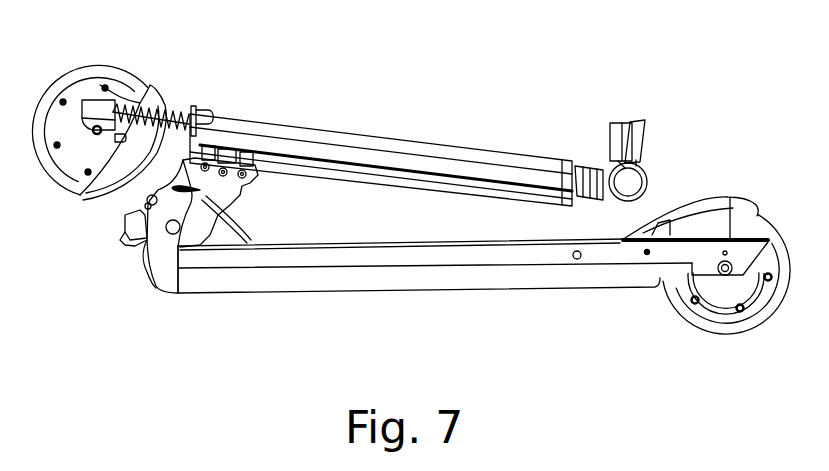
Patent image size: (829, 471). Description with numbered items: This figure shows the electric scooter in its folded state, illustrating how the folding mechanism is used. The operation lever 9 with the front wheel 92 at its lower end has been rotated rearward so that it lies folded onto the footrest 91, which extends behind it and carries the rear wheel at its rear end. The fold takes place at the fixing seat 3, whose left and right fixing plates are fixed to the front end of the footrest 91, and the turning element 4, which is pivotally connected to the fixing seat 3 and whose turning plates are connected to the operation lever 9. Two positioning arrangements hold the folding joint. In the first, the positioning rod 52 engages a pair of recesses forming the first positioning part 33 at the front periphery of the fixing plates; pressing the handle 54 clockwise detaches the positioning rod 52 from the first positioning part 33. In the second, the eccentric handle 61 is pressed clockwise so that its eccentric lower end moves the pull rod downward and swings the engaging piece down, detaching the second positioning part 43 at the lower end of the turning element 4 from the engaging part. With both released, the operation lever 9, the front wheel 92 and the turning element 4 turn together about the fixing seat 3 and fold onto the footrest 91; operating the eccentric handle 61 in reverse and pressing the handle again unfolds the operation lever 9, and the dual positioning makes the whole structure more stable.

The front wheel 92 is at (112, 78).
The operation lever 9 is at (410, 137).
The turning element 4 is at (247, 188).
The eccentric handle 61 is at (247, 236).
The handle 54 is at (150, 198).
The positioning rod 52 is at (123, 230).
The second positioning part 43 is at (133, 241).
The first positioning part 33 is at (147, 248).
The fixing seat 3 is at (155, 273).
The footrest 91 is at (477, 285).